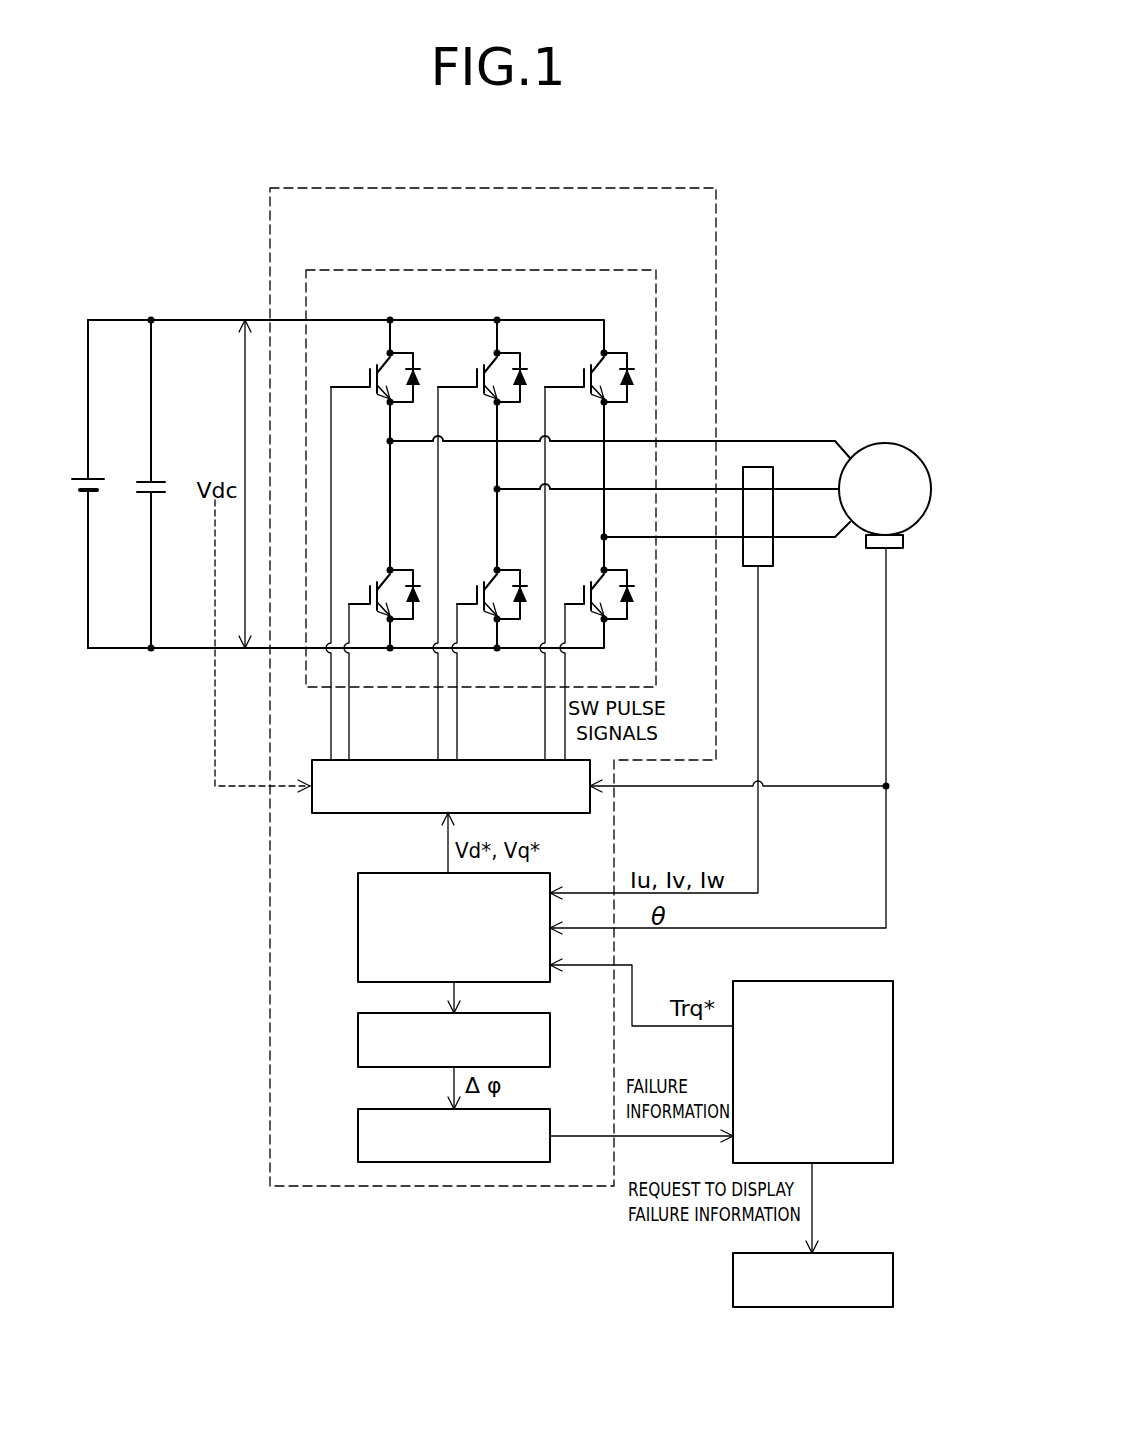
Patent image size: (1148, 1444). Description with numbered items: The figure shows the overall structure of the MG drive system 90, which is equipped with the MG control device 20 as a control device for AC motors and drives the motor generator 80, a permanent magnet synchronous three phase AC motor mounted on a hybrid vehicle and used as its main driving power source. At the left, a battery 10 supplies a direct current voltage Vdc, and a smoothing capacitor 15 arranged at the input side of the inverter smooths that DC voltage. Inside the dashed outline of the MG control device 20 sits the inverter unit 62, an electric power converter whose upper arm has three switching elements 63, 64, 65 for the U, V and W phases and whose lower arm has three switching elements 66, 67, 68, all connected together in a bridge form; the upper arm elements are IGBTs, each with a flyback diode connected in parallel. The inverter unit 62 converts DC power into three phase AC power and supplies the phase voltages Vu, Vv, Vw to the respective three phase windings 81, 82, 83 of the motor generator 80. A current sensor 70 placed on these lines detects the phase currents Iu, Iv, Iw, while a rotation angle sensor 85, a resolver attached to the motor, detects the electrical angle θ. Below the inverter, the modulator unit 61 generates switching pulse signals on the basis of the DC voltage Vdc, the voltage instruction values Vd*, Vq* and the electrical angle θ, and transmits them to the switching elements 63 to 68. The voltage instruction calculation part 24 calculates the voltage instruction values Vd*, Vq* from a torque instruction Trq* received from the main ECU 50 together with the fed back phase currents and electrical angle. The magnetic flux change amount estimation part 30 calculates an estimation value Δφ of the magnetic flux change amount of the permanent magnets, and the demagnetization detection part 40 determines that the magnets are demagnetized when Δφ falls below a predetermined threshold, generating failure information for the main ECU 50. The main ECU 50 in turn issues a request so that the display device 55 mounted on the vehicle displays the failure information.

The battery 10 is at (80, 477).
The smoothing capacitor 15 is at (145, 481).
The MG control device 20 is at (437, 188).
The voltage instruction calculation part 24 is at (358, 929).
The magnetic flux change amount estimation part 30 is at (358, 1044).
The demagnetization detection part 40 is at (358, 1138).
The main ECU 50 is at (893, 1057).
The display device 55 is at (893, 1280).
The modulator unit 61 is at (378, 760).
The inverter unit 62 is at (583, 270).
The U phase upper arm switching element 63 is at (386, 362).
The V phase upper arm switching element 64 is at (493, 362).
The W phase upper arm switching element 65 is at (600, 362).
The U phase lower arm switching element 66 is at (386, 579).
The V phase lower arm switching element 67 is at (493, 579).
The W phase lower arm switching element 68 is at (600, 579).
The current sensor 70 is at (757, 467).
The motor generator 80 is at (887, 443).
The U phase winding 81 is at (800, 441).
The V phase winding 82 is at (806, 489).
The W phase winding 83 is at (818, 538).
The rotation angle sensor 85 is at (896, 548).
The MG drive system 90 is at (799, 330).